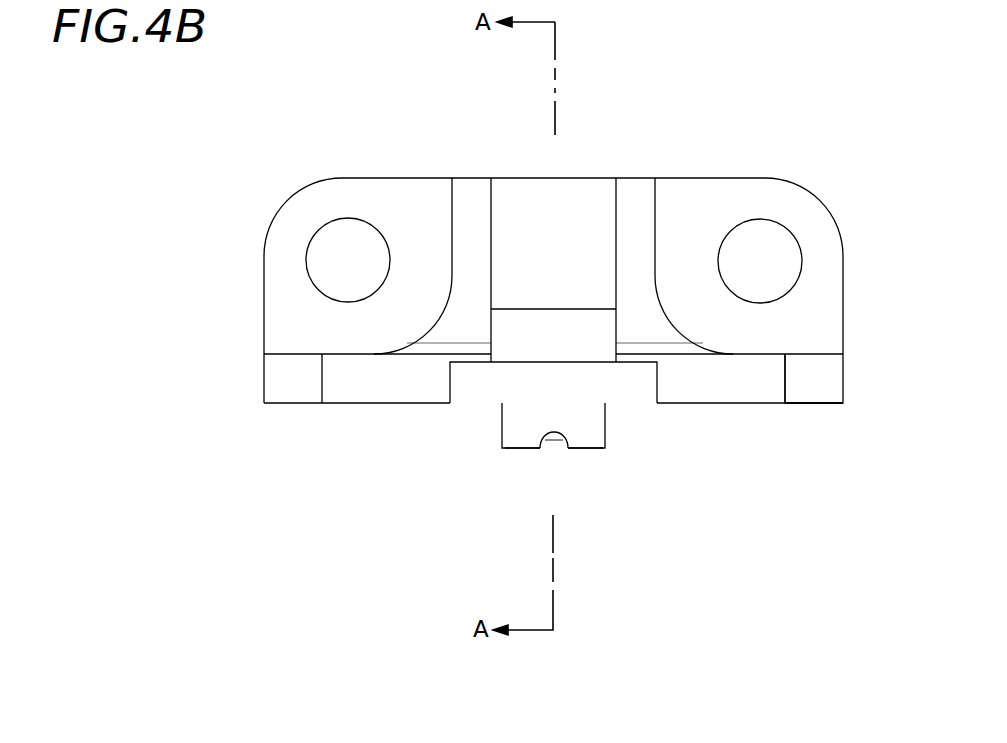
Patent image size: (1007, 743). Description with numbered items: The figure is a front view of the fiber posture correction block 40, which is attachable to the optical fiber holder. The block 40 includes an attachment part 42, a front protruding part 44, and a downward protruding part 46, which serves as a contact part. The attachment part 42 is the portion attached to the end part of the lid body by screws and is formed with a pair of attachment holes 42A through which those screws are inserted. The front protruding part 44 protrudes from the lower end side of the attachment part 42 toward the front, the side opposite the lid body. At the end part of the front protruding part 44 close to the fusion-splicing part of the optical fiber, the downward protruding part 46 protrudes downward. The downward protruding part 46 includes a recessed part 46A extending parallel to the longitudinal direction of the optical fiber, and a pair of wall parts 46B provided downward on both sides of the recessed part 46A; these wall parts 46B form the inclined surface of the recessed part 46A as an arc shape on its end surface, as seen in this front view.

The block 40 is at (700, 110).
The attachment part 42 is at (520, 213).
The attachment holes 42A is at (352, 248).
The front protruding part 44 is at (818, 385).
The downward protruding part 46 is at (497, 432).
The recessed part 46A is at (555, 440).
The wall parts 46B is at (517, 442).